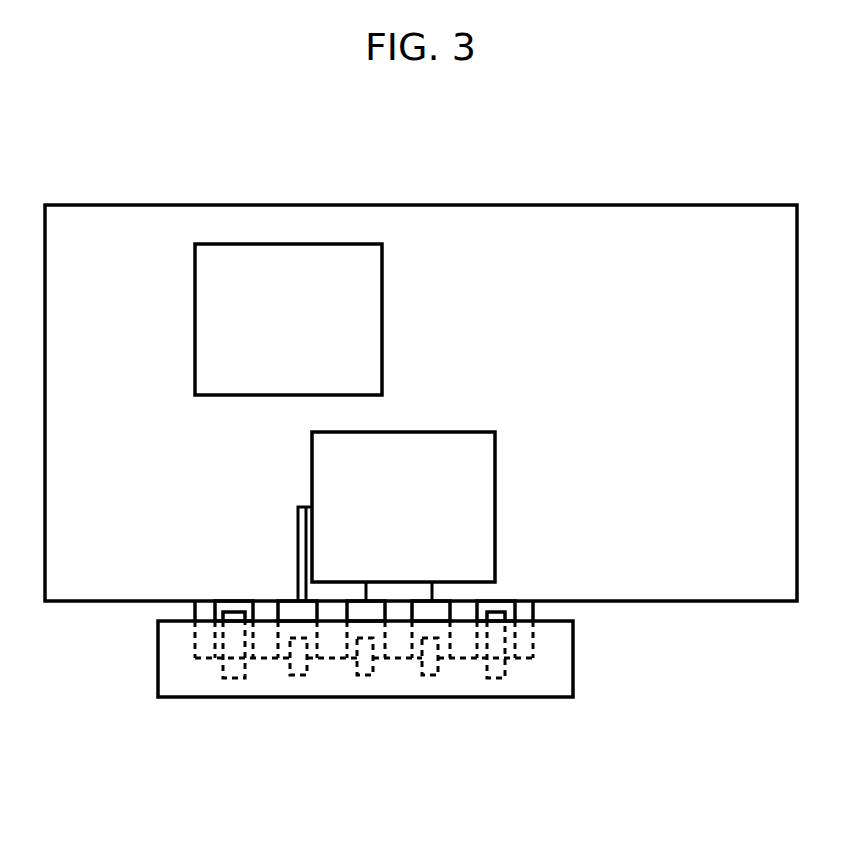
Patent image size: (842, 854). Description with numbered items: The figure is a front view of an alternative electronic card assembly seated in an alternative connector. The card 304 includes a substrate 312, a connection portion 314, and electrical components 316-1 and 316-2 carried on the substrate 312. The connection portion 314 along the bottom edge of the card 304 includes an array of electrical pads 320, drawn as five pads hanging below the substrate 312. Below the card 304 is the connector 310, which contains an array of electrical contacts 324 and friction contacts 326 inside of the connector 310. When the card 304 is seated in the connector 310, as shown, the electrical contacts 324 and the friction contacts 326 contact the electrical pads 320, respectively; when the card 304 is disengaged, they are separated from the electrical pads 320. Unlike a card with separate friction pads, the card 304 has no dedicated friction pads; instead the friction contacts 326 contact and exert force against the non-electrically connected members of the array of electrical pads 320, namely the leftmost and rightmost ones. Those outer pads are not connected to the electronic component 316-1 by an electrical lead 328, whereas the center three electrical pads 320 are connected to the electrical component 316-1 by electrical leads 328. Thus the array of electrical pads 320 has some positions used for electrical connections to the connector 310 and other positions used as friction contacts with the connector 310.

The card 304 is at (495, 203).
The substrate 312 is at (645, 205).
The electrical component 316-1 is at (495, 502).
The electrical component 316-2 is at (382, 315).
The electrical lead 328 is at (298, 507).
The electrical pads 320 is at (545, 550).
The connection portion 314 is at (533, 611).
The connector 310 is at (573, 697).
The electrical contacts 324 is at (300, 675).
The friction contacts 326 is at (493, 678).